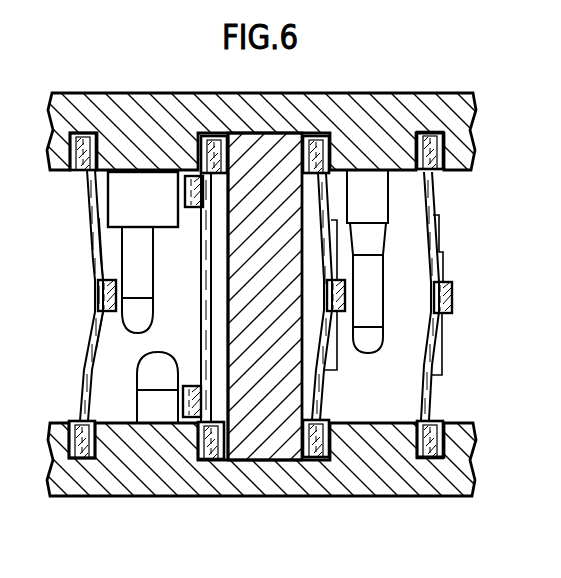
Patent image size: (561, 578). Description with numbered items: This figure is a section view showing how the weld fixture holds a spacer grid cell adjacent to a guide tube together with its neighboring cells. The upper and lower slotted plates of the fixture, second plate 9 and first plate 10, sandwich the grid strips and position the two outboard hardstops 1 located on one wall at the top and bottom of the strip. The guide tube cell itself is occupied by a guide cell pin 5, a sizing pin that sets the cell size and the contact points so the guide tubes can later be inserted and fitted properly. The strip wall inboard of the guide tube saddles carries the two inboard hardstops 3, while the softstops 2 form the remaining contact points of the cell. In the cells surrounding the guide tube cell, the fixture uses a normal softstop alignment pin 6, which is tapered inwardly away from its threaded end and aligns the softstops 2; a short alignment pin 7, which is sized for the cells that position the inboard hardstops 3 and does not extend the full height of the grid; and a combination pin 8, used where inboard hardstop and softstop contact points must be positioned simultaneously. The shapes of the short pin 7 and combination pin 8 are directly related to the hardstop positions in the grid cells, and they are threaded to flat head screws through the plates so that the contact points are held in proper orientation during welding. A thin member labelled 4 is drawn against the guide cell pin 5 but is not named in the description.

The outboard hardstop 1 is at (437, 172).
The softstop 2 is at (452, 309).
The inboard hardstop 3 is at (178, 203).
The insulating sheet 4 is at (228, 148).
The guide cell pin 5 is at (268, 278).
The alignment pin 6 is at (370, 345).
The short alignment pin 7 is at (150, 375).
The combination pin 8 is at (130, 264).
The second plate 9 is at (372, 93).
The first plate 10 is at (335, 488).